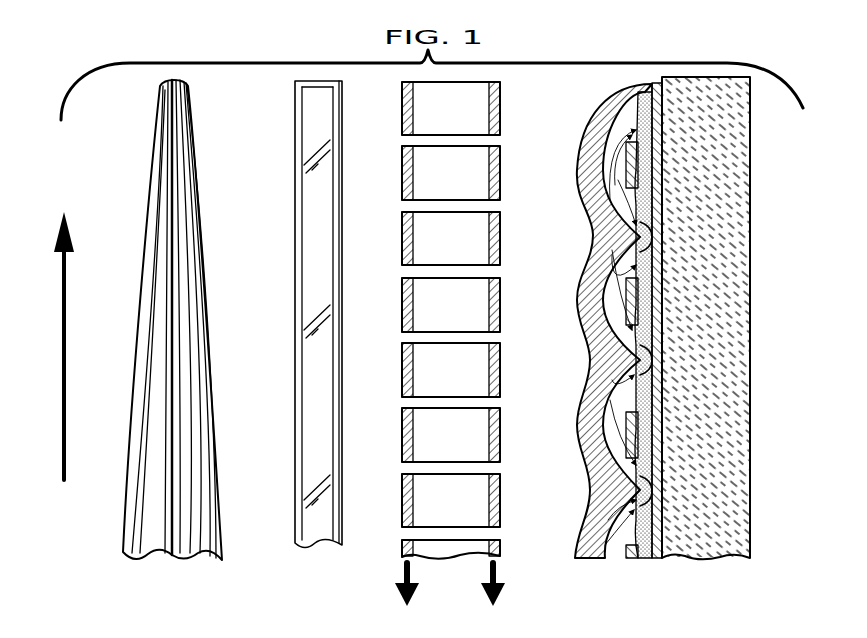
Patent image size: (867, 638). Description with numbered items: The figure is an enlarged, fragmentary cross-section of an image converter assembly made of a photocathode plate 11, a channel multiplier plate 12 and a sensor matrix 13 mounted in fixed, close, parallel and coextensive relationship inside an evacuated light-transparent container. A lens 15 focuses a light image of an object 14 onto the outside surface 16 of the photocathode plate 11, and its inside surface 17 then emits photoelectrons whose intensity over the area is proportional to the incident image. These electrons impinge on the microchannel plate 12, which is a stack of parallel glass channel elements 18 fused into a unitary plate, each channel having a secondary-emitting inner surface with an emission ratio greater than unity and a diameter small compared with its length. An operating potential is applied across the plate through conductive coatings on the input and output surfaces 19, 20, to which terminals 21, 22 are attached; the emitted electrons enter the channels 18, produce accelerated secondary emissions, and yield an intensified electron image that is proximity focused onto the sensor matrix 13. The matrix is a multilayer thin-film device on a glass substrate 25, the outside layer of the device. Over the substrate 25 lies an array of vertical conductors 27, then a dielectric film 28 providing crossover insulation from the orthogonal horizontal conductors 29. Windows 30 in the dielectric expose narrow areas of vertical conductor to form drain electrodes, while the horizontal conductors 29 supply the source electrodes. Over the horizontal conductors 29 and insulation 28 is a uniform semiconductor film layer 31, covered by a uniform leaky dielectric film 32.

The photocathode plate 11 is at (217, 336).
The channel multiplier plate 12 is at (451, 336).
The sensor matrix 13 is at (684, 341).
The object 14 is at (60, 359).
The lens 15 is at (138, 525).
The outside surface 16 is at (296, 337).
The inside surface 17 is at (451, 319).
The channel elements 18 is at (457, 319).
The input surface 19 is at (400, 80).
The output surface 20 is at (500, 80).
The terminal 21 is at (406, 598).
The terminal 22 is at (492, 598).
The substrate 25 is at (700, 558).
The vertical conductors 27 is at (655, 84).
The dielectric film 28 is at (645, 558).
The horizontal conductors 29 is at (640, 165).
The windows 30 is at (650, 237).
The semiconductor film layer 31 is at (622, 558).
The leaky dielectric film 32 is at (590, 548).